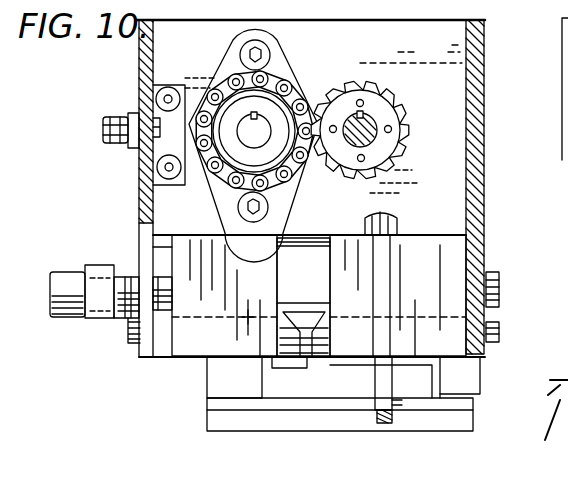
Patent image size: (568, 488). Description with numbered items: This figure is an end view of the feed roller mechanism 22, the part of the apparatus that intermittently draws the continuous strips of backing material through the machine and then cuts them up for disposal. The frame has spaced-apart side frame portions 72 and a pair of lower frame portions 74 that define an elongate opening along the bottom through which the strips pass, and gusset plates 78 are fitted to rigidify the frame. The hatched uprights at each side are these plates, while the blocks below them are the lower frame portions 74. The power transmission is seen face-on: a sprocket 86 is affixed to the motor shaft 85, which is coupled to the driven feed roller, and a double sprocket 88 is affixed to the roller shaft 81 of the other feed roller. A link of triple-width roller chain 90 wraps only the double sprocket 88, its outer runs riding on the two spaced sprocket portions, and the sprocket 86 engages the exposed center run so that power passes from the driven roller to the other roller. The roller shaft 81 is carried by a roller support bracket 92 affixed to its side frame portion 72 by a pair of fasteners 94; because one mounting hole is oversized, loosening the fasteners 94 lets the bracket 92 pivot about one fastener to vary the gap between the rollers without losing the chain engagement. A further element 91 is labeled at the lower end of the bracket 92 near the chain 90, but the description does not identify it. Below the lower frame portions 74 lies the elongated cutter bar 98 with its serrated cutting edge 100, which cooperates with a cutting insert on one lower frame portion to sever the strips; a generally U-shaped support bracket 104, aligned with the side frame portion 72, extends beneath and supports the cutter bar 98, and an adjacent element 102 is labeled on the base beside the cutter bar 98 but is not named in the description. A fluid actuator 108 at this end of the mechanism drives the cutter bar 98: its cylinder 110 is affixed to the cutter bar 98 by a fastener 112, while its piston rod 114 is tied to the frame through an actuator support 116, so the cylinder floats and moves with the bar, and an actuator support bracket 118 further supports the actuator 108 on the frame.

The feed roller mechanism 22 is at (170, 376).
The side frame portion 72 is at (440, 58).
The lower frame portion 74 is at (197, 317).
The gusset plate 78 is at (140, 64).
The roller shaft 81 is at (366, 121).
The motor shaft 85 is at (256, 136).
The sprocket 86 is at (392, 173).
The double sprocket 88 is at (294, 150).
The triple-width roller chain 90 is at (270, 82).
The lower idler sprocket 91 is at (256, 207).
The roller support bracket 92 is at (225, 197).
The fastener 94 is at (258, 55).
The cutter bar 98 is at (110, 141).
The serrated cutting edge 100 is at (349, 365).
The base block 102 is at (283, 366).
The U-shaped support bracket 104 is at (232, 421).
The fluid actuator 108 is at (403, 226).
The cylinder 110 is at (420, 260).
The fastener 112 is at (404, 377).
The piston rod 114 is at (128, 316).
The actuator support 116 is at (93, 268).
The actuator support bracket 118 is at (462, 268).